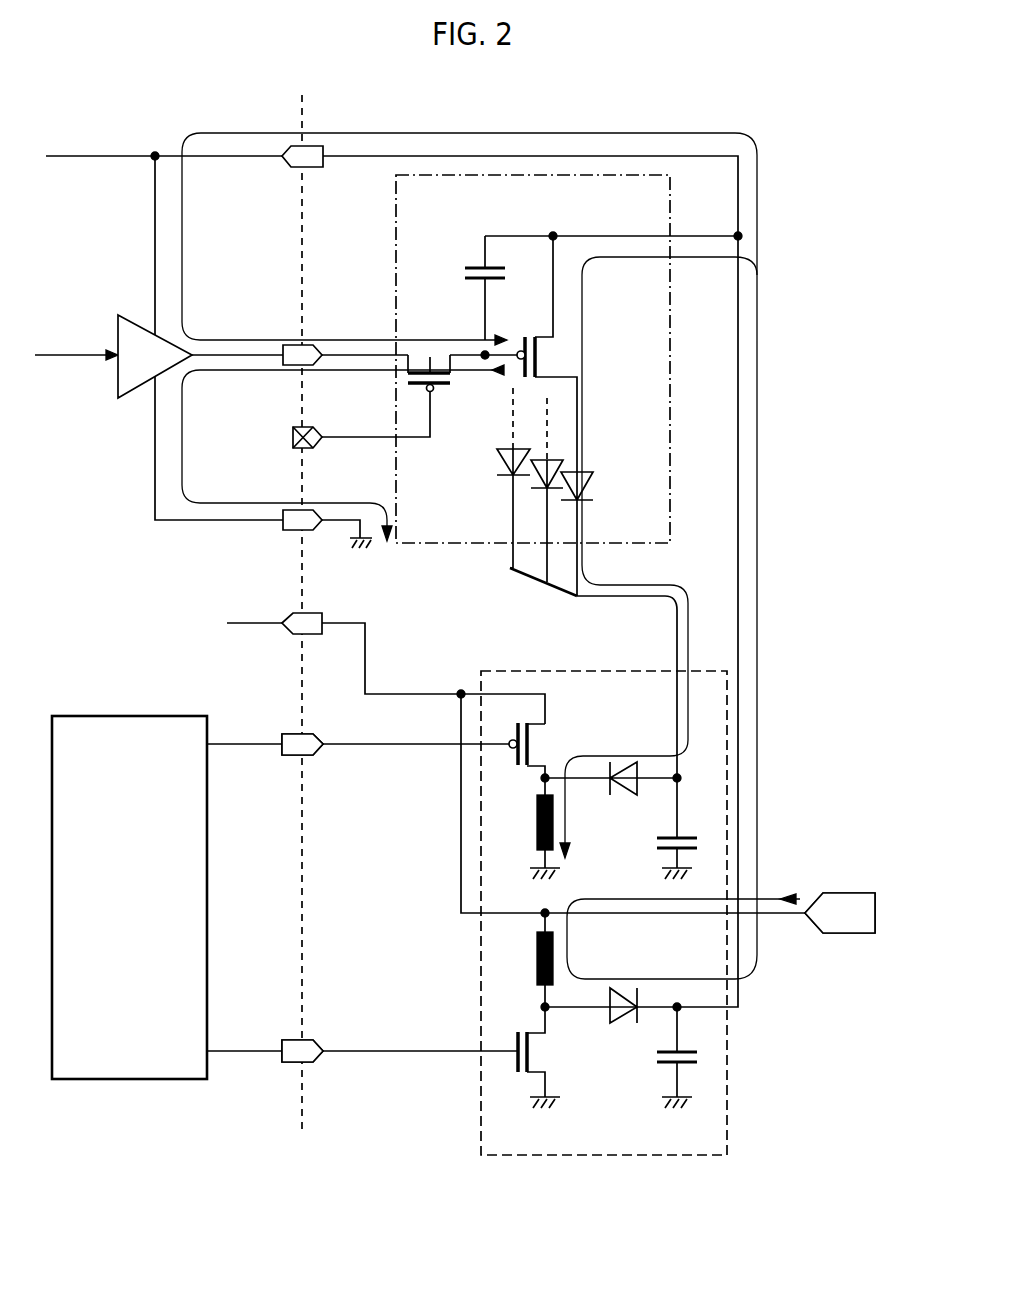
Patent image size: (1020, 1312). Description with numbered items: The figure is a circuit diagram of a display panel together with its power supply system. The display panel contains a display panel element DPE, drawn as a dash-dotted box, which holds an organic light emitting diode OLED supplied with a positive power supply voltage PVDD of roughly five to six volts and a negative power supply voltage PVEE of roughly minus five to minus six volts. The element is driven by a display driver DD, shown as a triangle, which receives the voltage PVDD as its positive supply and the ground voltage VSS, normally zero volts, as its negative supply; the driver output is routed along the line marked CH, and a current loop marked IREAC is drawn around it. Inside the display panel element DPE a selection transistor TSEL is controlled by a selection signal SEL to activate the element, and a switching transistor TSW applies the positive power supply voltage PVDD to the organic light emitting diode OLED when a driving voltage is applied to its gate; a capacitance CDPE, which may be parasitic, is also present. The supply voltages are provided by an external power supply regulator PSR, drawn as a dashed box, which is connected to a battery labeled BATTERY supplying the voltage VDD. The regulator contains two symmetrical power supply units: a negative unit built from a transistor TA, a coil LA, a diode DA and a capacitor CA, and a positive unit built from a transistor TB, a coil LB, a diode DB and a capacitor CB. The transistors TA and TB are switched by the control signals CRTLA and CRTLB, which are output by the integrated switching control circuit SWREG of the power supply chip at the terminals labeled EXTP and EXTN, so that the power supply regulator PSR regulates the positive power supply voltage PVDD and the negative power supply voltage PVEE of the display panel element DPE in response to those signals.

The positive power supply voltage PVDD is at (394, 554).
The ground voltage VSS is at (263, 369).
The display driver DD is at (113, 356).
The channel line CH is at (293, 345).
The reactive current path IREAC is at (343, 453).
The selection signal SEL is at (361, 420).
The selection transistor TSEL is at (448, 389).
The display panel element DPE is at (533, 359).
The capacitance CDPE is at (461, 283).
The switching transistor TSW is at (539, 354).
The organic light emitting diode OLED is at (580, 492).
The negative power supply voltage PVEE is at (591, 673).
The supply voltage VDD is at (551, 773).
The battery BATTERY is at (838, 932).
The switching control circuit SWREG is at (129, 897).
The switching control signal CRTLA is at (358, 728).
The external P-channel gate terminal EXTP is at (306, 761).
The switching control signal CRTLB is at (362, 1036).
The external N-channel gate terminal EXTN is at (302, 1066).
The power supply regulator PSR is at (604, 913).
The transistor TA is at (516, 736).
The coil LA is at (532, 828).
The diode DA is at (613, 796).
The capacitor CA is at (686, 828).
The coil LB is at (529, 962).
The diode DB is at (638, 1021).
The transistor TB is at (549, 1057).
The capacitor CB is at (688, 1057).